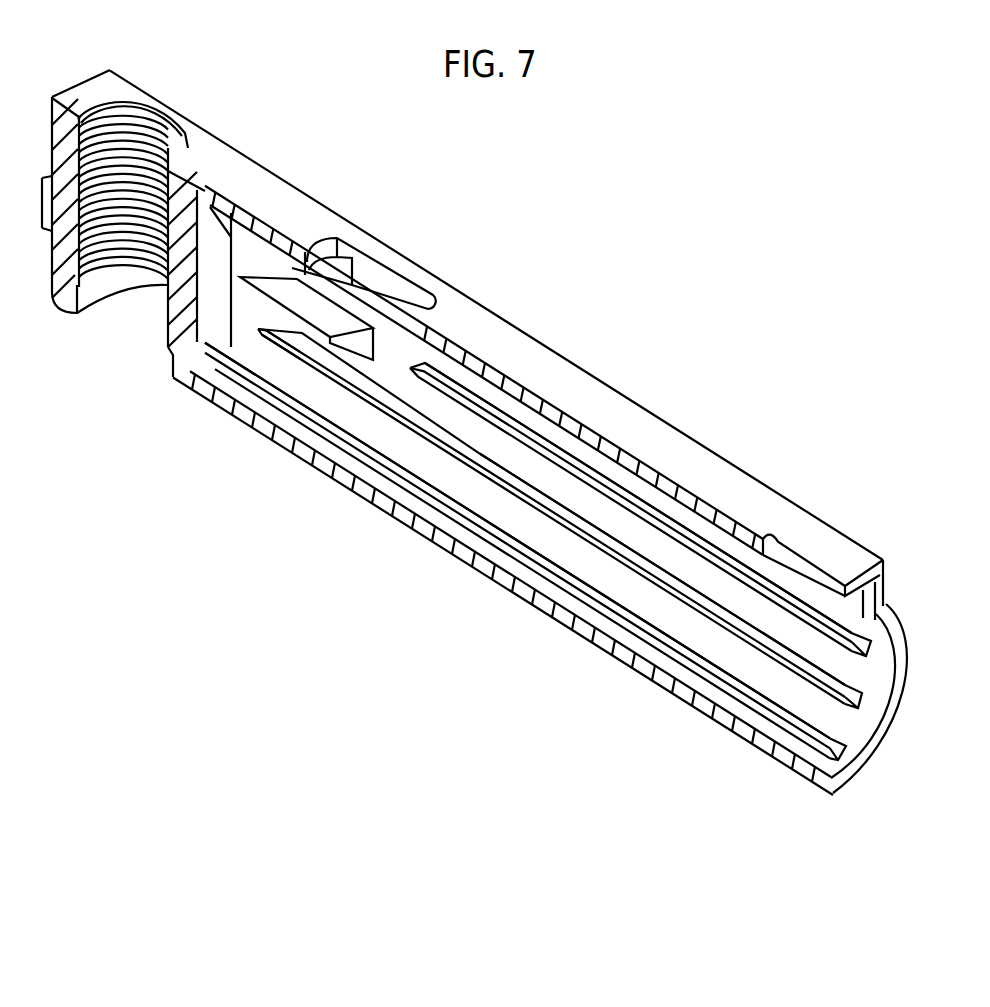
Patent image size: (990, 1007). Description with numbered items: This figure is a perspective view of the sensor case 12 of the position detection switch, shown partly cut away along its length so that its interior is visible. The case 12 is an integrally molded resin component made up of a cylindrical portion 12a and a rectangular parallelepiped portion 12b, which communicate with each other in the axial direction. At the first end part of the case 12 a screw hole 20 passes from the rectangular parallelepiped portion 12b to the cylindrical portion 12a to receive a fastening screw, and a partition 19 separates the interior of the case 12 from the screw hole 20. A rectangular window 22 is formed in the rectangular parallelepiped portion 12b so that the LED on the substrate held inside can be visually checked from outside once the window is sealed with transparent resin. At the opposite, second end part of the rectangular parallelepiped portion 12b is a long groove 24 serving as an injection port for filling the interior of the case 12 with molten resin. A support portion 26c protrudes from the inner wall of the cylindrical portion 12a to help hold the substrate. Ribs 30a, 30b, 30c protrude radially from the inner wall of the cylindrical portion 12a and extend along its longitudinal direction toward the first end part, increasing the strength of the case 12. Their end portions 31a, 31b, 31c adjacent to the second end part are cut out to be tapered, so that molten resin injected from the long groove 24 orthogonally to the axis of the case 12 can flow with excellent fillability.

The case 12 is at (553, 357).
The cylindrical portion 12a is at (405, 517).
The rectangular parallelepiped portion 12b is at (237, 157).
The partition 19 is at (177, 313).
The screw hole 20 is at (125, 130).
The rectangular window 22 is at (365, 256).
The long groove 24 is at (797, 563).
The support portion 26c is at (302, 333).
The rib 30a is at (863, 633).
The rib 30b is at (757, 643).
The rib 30c is at (773, 708).
The end portion 31a is at (873, 655).
The end portion 31b is at (866, 712).
The end portion 31c is at (848, 760).